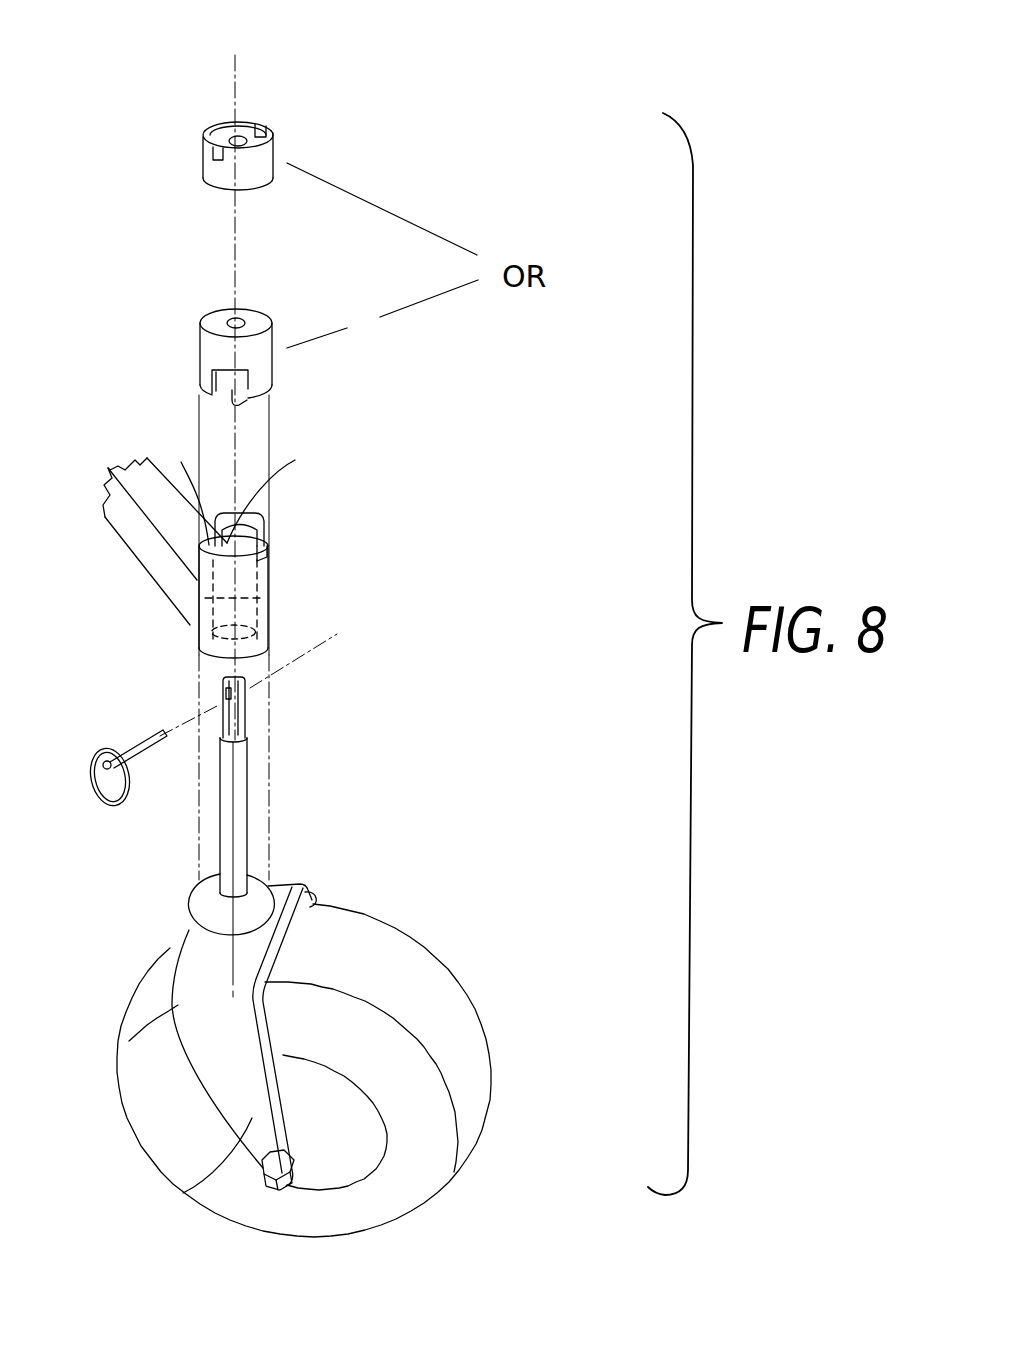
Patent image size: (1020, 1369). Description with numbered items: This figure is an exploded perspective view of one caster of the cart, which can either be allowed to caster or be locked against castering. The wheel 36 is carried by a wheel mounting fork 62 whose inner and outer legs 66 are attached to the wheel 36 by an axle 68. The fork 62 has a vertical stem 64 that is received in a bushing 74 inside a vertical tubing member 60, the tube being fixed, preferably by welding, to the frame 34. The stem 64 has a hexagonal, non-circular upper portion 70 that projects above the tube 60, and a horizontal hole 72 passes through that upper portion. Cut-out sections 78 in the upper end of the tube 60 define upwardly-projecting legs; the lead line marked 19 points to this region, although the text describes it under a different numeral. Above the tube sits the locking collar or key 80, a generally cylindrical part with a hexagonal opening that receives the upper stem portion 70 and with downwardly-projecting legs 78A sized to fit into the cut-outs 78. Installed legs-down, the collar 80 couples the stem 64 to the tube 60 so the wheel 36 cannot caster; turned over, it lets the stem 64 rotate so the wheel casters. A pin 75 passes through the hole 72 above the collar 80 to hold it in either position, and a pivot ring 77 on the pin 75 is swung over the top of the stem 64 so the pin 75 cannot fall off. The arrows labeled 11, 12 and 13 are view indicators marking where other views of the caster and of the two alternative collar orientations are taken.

The section line indicator (FIG. 11) 11 is at (85, 612).
The section line indicator (FIG. 12) 12 is at (92, 12).
The section line indicator (FIG. 13) 13 is at (78, 160).
The locking collar 80 is at (210, 94).
The downwardly-projecting legs 78A is at (256, 112).
The cut-out sections 78 is at (303, 517).
The spring clip arm 19 is at (281, 497).
The frame 34 is at (115, 517).
The vertical tubing member 60 is at (262, 598).
The bushing 74 is at (205, 598).
The upper portion 70 is at (240, 703).
The horizontal hole 72 is at (222, 693).
The pin 75 is at (155, 742).
The pivot ring 77 is at (90, 775).
The vertical stem 64 is at (237, 812).
The wheel mounting fork 62 is at (188, 967).
The inner and outer legs 66 is at (322, 903).
The wheel 36 is at (465, 1018).
The axle 68 is at (273, 1188).